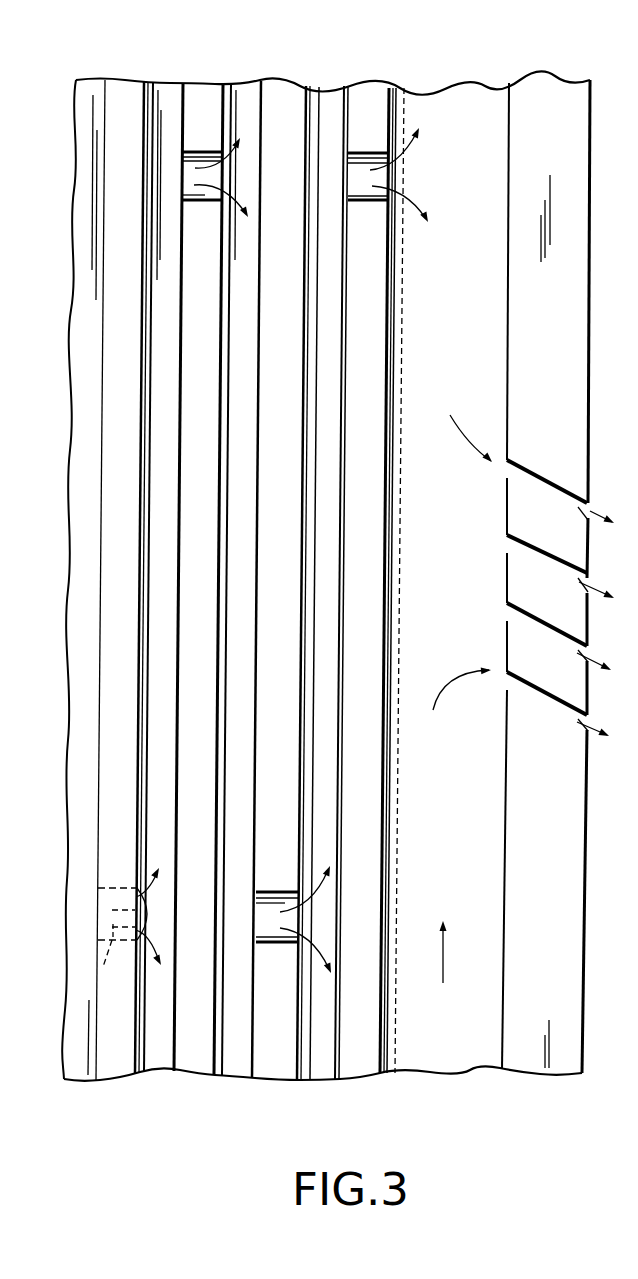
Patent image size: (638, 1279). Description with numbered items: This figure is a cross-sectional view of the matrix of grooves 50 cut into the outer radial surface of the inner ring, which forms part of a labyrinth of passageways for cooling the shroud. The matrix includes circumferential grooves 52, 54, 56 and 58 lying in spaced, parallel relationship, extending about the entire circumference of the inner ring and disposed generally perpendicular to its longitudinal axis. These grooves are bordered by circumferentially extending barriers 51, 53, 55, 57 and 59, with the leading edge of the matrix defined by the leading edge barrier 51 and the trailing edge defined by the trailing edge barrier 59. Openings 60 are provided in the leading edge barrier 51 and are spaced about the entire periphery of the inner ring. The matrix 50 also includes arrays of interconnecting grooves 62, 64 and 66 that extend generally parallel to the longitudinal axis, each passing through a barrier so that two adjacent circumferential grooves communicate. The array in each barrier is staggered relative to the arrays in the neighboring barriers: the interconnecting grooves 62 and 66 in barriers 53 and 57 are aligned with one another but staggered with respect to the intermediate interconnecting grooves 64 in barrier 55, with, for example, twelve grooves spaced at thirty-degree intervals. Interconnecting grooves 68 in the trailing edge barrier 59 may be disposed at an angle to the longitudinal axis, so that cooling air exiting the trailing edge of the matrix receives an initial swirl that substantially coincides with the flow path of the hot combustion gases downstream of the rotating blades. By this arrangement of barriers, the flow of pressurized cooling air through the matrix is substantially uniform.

The matrix of grooves 50 is at (337, 53).
The leading edge barrier 51 is at (132, 455).
The circumferential groove 52 is at (175, 456).
The barrier 53 is at (208, 456).
The circumferential groove 54 is at (253, 456).
The barrier 55 is at (289, 456).
The circumferential groove 56 is at (333, 456).
The barrier 57 is at (377, 456).
The circumferential groove 58 is at (450, 507).
The trailing edge barrier 59 is at (554, 792).
The openings 60 is at (131, 936).
The interconnecting grooves 62 is at (190, 180).
The interconnecting grooves 64 is at (272, 930).
The interconnecting grooves 66 is at (365, 193).
The interconnecting grooves 68 is at (588, 504).